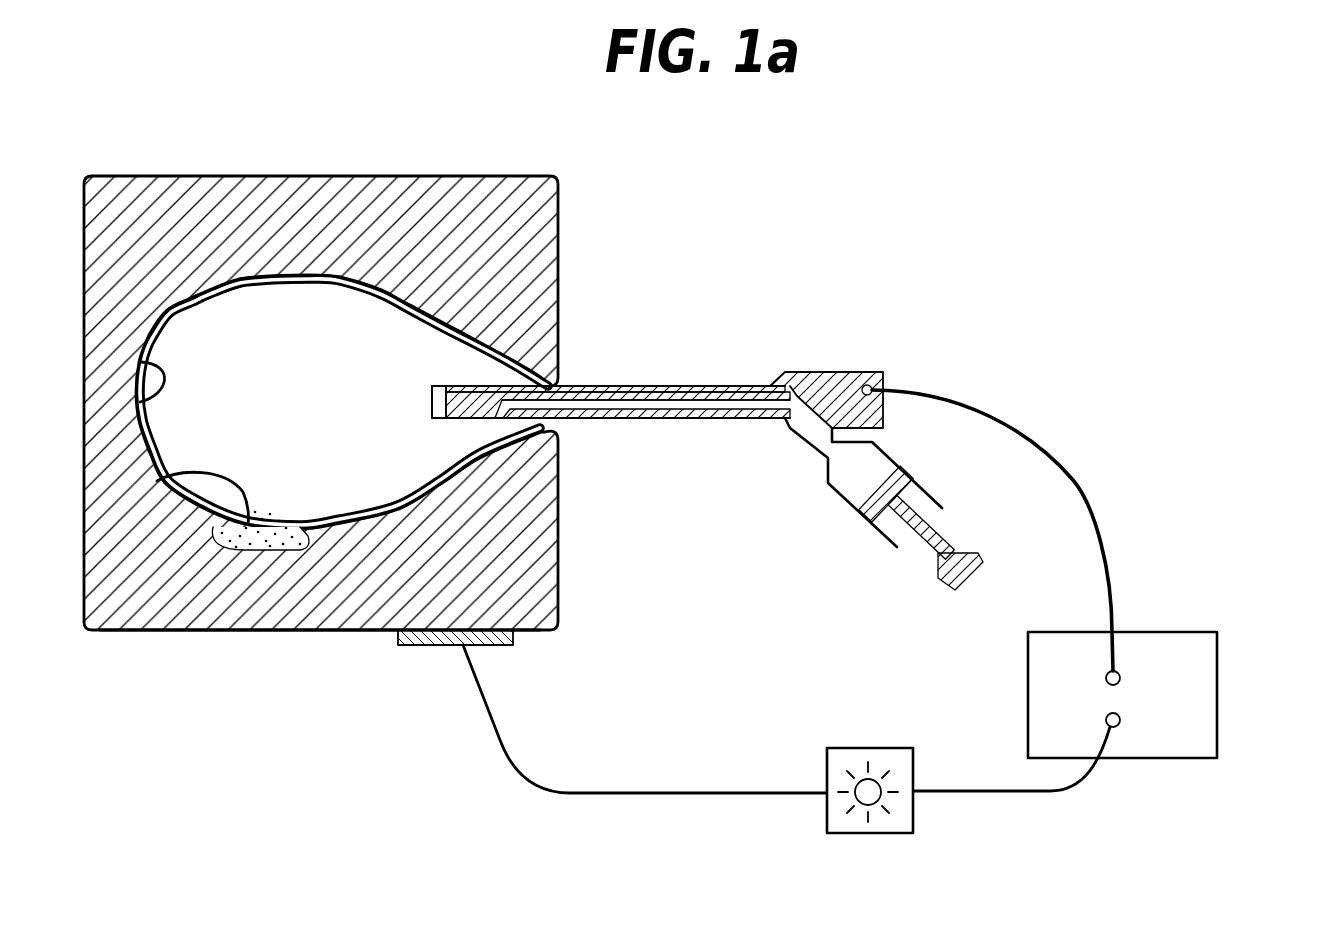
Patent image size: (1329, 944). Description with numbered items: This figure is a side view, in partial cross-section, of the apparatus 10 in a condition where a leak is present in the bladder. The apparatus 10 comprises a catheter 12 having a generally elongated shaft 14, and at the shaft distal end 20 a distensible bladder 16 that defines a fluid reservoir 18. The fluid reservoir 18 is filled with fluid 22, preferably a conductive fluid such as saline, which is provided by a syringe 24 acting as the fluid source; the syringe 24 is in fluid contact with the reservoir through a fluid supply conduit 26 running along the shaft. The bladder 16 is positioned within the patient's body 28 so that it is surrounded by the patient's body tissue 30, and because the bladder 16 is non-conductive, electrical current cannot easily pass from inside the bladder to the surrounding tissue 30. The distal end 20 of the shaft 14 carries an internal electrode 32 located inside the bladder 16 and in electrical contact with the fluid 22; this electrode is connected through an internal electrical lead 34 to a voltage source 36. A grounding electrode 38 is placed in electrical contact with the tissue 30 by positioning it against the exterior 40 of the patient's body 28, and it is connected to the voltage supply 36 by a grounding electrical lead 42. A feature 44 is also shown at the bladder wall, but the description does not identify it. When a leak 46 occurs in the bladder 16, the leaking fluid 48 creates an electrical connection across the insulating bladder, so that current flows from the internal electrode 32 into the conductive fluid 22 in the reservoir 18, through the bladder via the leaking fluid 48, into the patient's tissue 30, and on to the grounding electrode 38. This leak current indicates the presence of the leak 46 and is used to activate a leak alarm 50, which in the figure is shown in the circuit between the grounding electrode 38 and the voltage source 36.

The apparatus 10 is at (803, 203).
The catheter 12 is at (720, 386).
The shaft 14 is at (633, 386).
The distensible bladder 16 is at (155, 372).
The fluid reservoir 18 is at (303, 342).
The shaft distal end 20 is at (433, 386).
The fluid 22 is at (246, 307).
The syringe 24 is at (836, 498).
The fluid supply conduit 26 is at (662, 418).
The patient's body 28 is at (534, 176).
The patient's body tissue 30 is at (463, 210).
The internal electrode 32 is at (440, 410).
The internal electrical lead 34 is at (795, 372).
The voltage source 36 is at (1218, 690).
The grounding electrode 38 is at (398, 636).
The exterior of the patient's body 40 is at (247, 631).
The grounding electrical lead 42 is at (662, 792).
The balloon fold 44 is at (187, 473).
The leak 46 is at (274, 545).
The leaking fluid 48 is at (818, 808).
The leak alarm 50 is at (872, 794).